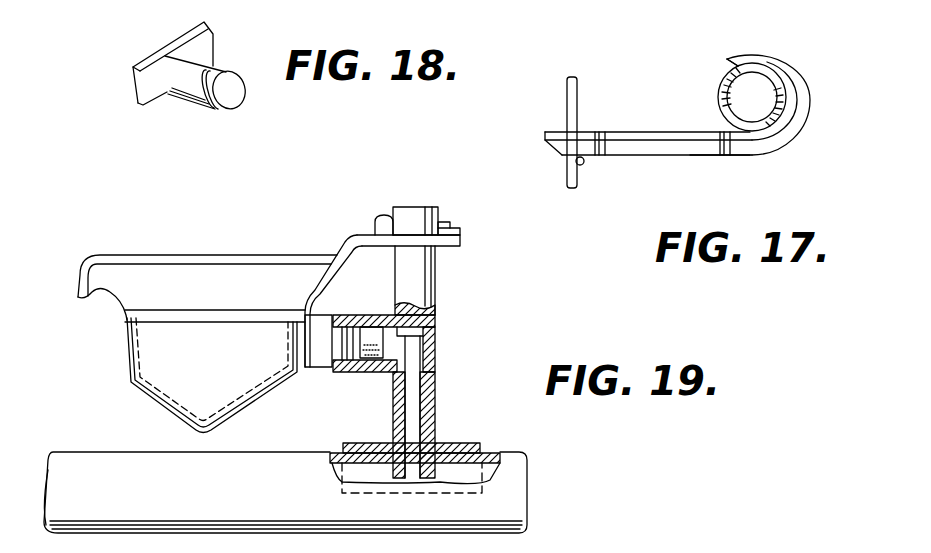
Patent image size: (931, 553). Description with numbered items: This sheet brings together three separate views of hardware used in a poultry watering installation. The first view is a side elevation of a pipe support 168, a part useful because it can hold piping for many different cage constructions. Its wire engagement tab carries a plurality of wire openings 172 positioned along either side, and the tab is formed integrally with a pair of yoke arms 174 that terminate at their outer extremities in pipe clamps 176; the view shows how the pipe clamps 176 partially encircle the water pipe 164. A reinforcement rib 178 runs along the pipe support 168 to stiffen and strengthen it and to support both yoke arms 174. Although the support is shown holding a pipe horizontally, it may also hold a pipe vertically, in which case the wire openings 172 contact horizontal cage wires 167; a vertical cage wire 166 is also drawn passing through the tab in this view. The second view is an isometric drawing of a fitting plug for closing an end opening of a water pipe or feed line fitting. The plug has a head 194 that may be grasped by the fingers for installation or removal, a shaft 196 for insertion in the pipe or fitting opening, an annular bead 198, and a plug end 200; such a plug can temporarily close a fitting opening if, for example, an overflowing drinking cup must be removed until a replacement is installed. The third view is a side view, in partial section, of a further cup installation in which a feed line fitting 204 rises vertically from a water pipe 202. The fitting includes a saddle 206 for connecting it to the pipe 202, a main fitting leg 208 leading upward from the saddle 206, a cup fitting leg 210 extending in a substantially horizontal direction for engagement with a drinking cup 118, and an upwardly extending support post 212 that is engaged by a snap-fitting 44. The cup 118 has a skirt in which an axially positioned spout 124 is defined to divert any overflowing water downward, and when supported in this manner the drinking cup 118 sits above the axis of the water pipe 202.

In FIG. 18, the head 194 is at (133, 77).
In FIG. 18, the shaft 196 is at (187, 99).
In FIG. 18, the annular bead 198 is at (209, 110).
In FIG. 18, the plug end 200 is at (236, 96).
In FIG. 17, the water pipe 164 is at (738, 72).
In FIG. 17, the cross pin 166 is at (577, 95).
In FIG. 17, the horizontal cage wires 167 is at (584, 166).
In FIG. 17, the pipe support 168 is at (687, 156).
In FIG. 17, the wire openings 172 is at (598, 133).
In FIG. 17, the yoke arms 174 is at (683, 138).
In FIG. 17, the pipe clamps 176 is at (785, 80).
In FIG. 17, the reinforcement rib 178 is at (748, 155).
In FIG. 19, the snap-fitting 44 is at (461, 230).
In FIG. 19, the poultry drinking cup 118 is at (131, 366).
In FIG. 19, the axially positioned spout 124 is at (95, 296).
In FIG. 19, the water pipe 202 is at (92, 458).
In FIG. 19, the feed line fitting 204 is at (436, 338).
In FIG. 19, the saddle 206 is at (445, 443).
In FIG. 19, the main fitting leg 208 is at (430, 386).
In FIG. 19, the cup fitting leg 210 is at (338, 371).
In FIG. 19, the support post 212 is at (435, 288).